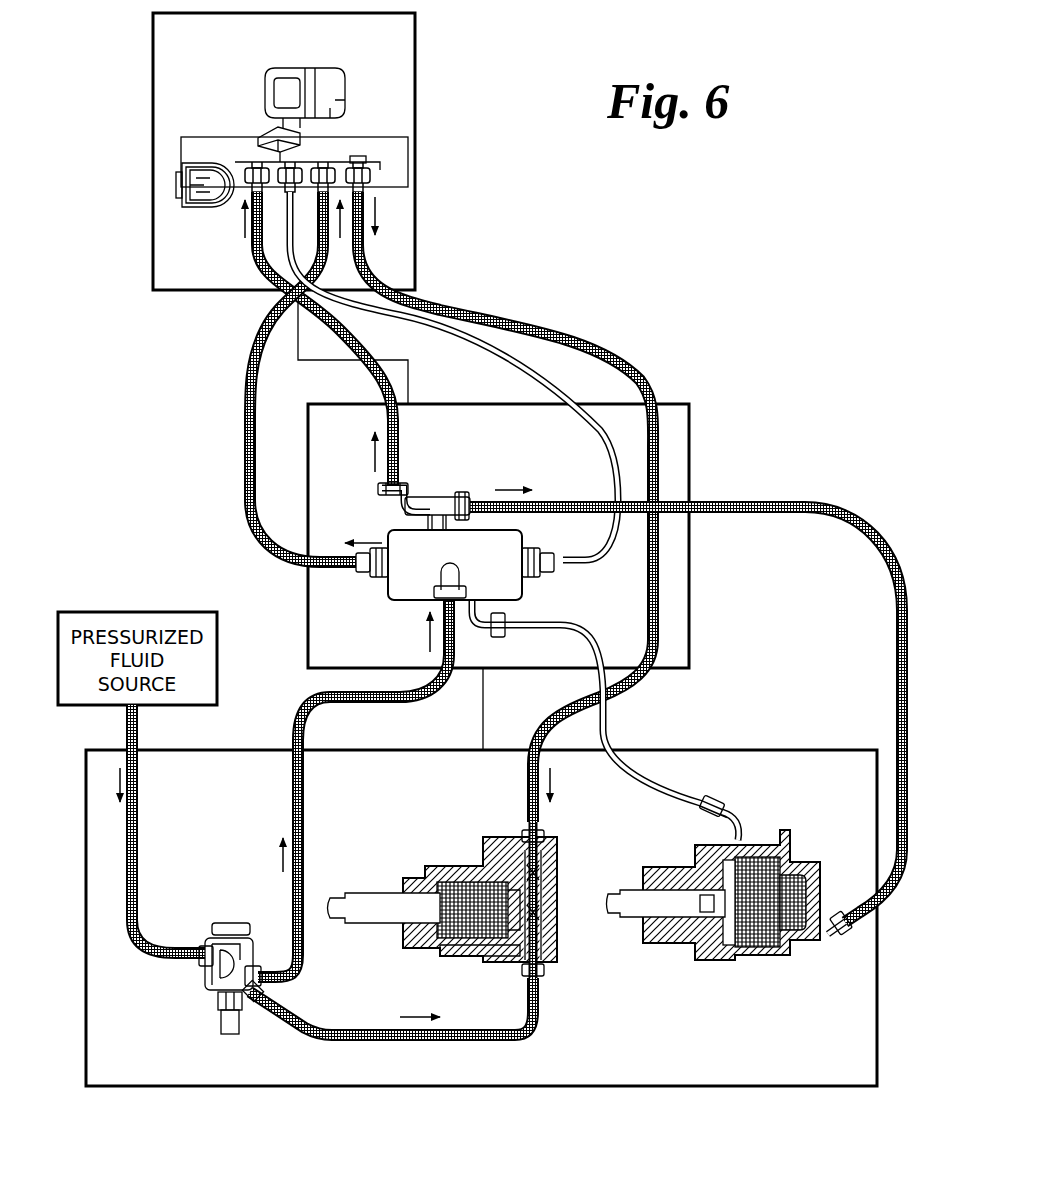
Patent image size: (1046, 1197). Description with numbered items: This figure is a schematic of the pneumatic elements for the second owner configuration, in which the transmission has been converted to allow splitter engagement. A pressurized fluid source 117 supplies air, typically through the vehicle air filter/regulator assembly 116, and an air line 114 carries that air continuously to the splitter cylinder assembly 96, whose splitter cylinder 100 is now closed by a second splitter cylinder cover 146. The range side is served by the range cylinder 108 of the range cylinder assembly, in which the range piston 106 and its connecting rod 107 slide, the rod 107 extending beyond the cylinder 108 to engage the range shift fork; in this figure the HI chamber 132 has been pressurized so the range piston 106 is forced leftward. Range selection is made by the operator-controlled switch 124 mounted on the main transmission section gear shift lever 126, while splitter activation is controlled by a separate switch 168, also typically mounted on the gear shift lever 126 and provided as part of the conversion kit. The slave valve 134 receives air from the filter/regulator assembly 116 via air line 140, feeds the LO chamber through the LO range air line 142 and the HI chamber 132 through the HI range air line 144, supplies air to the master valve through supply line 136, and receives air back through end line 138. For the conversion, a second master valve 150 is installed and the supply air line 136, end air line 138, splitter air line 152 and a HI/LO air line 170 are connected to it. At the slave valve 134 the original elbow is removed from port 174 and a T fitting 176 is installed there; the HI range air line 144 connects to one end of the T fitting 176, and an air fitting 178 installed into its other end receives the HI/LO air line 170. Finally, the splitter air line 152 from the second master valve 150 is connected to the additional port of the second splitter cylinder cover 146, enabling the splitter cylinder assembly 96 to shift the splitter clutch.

The splitter cylinder assembly 96 is at (467, 893).
The splitter cylinder 100 is at (729, 875).
The range piston 106 is at (735, 958).
The connecting rod 107 is at (628, 890).
The range cylinder 108 is at (655, 960).
The air line 114 is at (355, 1040).
The air filter/regulator assembly 116 is at (236, 922).
The pressurized fluid source 117 is at (135, 612).
The operator-controlled switch 124 is at (300, 140).
The gear shift lever 126 is at (345, 88).
The HI chamber 132 is at (800, 865).
The slave valve 134 is at (362, 598).
The supply line 136 is at (250, 462).
The end line 138 is at (452, 360).
The air line 140 is at (290, 767).
The LO range air line 142 is at (613, 728).
The HI range air line 144 is at (757, 500).
The second splitter cylinder cover 146 is at (553, 935).
The second master valve 150 is at (365, 150).
The splitter air line 152 is at (618, 360).
The switch 168 is at (182, 178).
The HI/LO air line 170 is at (285, 330).
The port 174 is at (432, 522).
The T fitting 176 is at (438, 497).
The air fitting 178 is at (385, 508).